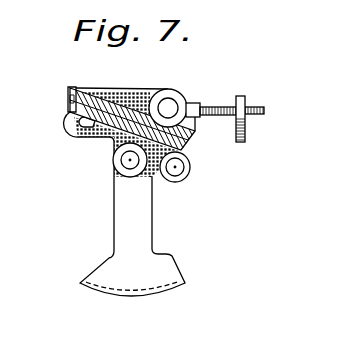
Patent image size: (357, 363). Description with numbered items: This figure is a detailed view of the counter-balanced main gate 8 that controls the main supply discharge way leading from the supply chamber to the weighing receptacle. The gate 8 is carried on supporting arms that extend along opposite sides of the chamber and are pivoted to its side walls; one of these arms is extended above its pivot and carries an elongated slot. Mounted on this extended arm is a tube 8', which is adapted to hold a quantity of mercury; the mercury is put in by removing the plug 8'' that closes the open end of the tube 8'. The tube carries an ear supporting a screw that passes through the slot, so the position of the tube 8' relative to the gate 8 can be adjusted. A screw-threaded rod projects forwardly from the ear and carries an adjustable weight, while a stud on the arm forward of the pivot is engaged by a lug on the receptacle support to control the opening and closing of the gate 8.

The main gate 8 is at (129, 205).
The tube 8' is at (102, 118).
The plug 8'' is at (66, 149).